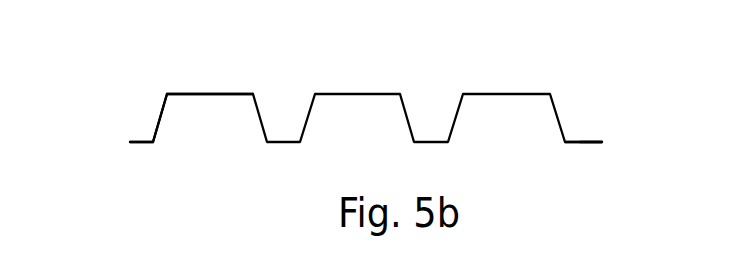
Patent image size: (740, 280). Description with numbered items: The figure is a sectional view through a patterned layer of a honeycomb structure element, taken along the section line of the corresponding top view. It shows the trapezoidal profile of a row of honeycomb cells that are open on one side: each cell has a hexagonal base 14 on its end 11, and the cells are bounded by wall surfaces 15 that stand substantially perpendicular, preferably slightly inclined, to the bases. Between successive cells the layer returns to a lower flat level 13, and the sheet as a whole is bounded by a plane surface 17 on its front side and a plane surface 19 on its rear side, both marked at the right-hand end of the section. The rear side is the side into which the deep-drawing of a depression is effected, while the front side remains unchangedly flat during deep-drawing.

The profiled trapezoidal sheet 11 is at (228, 95).
The lower flange (trough) 13 is at (110, 125).
The upper flange (crest) 14 is at (194, 93).
The inclined web 15 is at (162, 112).
The sheet edge region 17 is at (586, 144).
The edge lip 19 is at (586, 140).